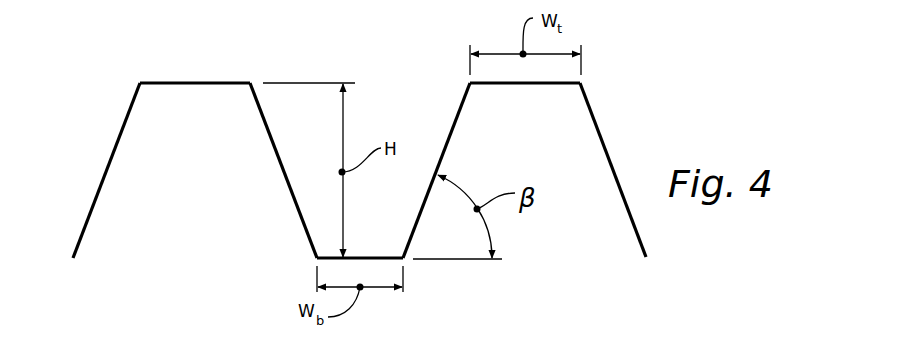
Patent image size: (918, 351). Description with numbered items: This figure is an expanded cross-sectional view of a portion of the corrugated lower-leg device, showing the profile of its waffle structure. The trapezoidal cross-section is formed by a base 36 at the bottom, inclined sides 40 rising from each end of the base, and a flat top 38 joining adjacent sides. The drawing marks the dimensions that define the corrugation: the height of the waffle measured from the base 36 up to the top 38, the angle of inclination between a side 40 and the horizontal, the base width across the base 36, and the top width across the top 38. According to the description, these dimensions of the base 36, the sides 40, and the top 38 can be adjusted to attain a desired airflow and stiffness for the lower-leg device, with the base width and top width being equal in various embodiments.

The base 36 is at (327, 258).
The land (top surface) 38 is at (177, 83).
The sides 40 is at (272, 147).